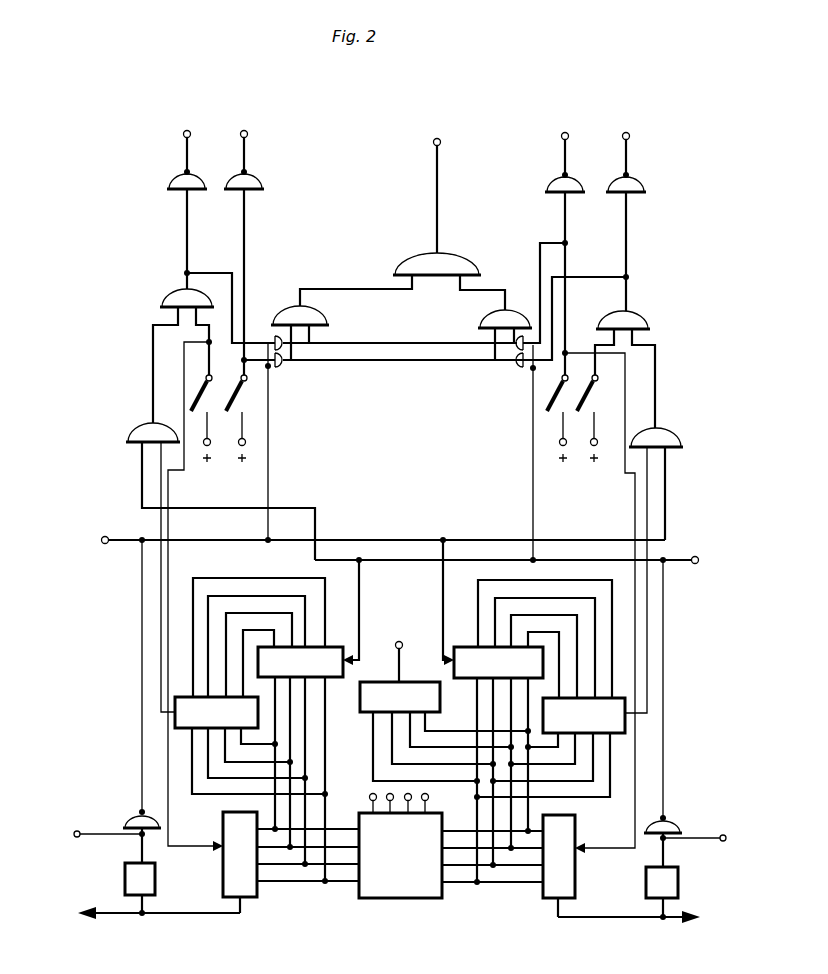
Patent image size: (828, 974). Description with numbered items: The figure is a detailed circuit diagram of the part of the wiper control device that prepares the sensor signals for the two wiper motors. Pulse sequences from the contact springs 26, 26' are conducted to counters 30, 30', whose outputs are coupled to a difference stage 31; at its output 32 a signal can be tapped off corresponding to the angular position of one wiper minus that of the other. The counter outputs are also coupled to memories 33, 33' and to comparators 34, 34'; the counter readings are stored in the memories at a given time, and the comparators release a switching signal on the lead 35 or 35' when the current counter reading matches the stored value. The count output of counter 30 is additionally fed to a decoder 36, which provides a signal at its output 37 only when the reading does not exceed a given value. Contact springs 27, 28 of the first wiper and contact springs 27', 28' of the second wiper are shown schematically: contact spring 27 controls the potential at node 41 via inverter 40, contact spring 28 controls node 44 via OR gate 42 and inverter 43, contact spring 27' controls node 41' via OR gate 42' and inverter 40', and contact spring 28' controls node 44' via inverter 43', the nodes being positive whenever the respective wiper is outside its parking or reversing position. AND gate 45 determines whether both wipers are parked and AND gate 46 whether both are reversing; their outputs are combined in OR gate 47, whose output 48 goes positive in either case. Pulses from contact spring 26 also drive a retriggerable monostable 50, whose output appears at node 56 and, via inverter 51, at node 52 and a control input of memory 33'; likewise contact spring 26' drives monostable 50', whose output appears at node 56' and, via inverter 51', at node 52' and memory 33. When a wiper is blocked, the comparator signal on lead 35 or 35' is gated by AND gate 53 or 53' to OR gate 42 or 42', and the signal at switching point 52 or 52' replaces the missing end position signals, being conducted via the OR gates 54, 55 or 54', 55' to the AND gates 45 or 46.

The contact spring 26 is at (629, 930).
The contact spring 26' is at (159, 928).
The contact spring 27 is at (538, 410).
The contact spring 27' is at (185, 410).
The contact spring 28 is at (597, 410).
The contact spring 28' is at (261, 410).
The counter 30 is at (542, 868).
The counter 30' is at (265, 868).
The difference stage 31 is at (405, 888).
The output 32 is at (423, 794).
The memory 33 is at (496, 647).
The memory 33' is at (304, 649).
The comparator 34 is at (617, 718).
The comparator 34' is at (182, 714).
The lead 35 is at (662, 580).
The lead 35' is at (141, 577).
The decoder 36 is at (403, 694).
The output 37 is at (396, 652).
The inverter 40 is at (572, 177).
The inverter 40' is at (165, 180).
The node 41 is at (565, 145).
The node 41' is at (184, 142).
The OR gate 42 is at (638, 308).
The OR gate 42' is at (172, 287).
The inverter 43 is at (644, 182).
The inverter 43' is at (265, 173).
The node 44 is at (626, 145).
The node 44' is at (240, 142).
The AND gate 45 is at (316, 318).
The AND gate 46 is at (494, 324).
The OR gate 47 is at (450, 263).
The output 48 is at (437, 185).
The retriggerable monostable 50 is at (674, 869).
The retriggerable monostable 50' is at (131, 866).
The inverter 51 is at (672, 812).
The inverter 51' is at (133, 808).
The node 52 is at (520, 560).
The node 52' is at (367, 541).
The AND gate 53 is at (664, 426).
The AND gate 53' is at (140, 424).
The OR gate 54 is at (521, 313).
The OR gate 54' is at (266, 319).
The OR gate 55 is at (496, 383).
The OR gate 55' is at (302, 375).
The node 56 is at (699, 850).
The node 56' is at (100, 846).